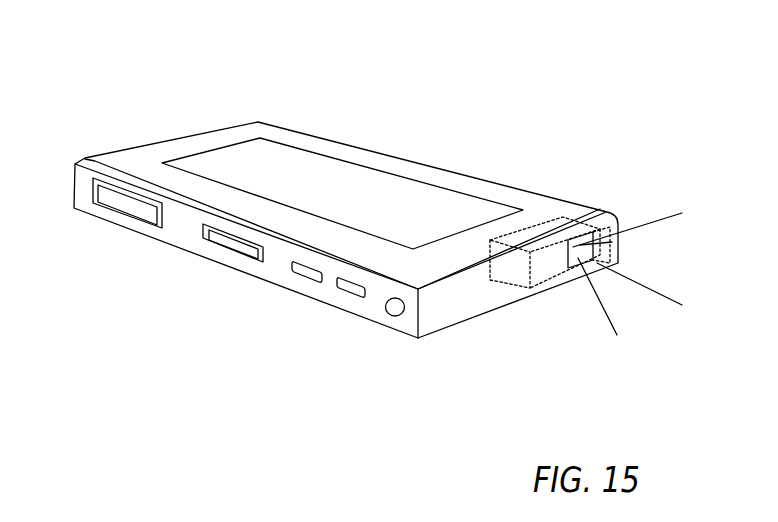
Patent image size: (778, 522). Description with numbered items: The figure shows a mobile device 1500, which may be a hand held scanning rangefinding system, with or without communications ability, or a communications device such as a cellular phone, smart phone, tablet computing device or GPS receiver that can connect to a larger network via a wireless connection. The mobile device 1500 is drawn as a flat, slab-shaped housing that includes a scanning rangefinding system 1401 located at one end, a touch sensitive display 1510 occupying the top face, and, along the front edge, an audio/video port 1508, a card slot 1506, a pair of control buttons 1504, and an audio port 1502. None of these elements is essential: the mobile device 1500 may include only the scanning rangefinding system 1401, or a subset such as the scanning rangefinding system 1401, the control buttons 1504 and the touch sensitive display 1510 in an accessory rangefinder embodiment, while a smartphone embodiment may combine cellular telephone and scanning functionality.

The mobile device 1500 is at (640, 75).
The touch sensitive display 1510 is at (360, 183).
The audio/video (A/V) port 1508 is at (115, 200).
The card slot 1506 is at (230, 243).
The control buttons 1504 is at (340, 291).
The audio port 1502 is at (393, 317).
The scanning rangefinding system 1401 is at (557, 228).